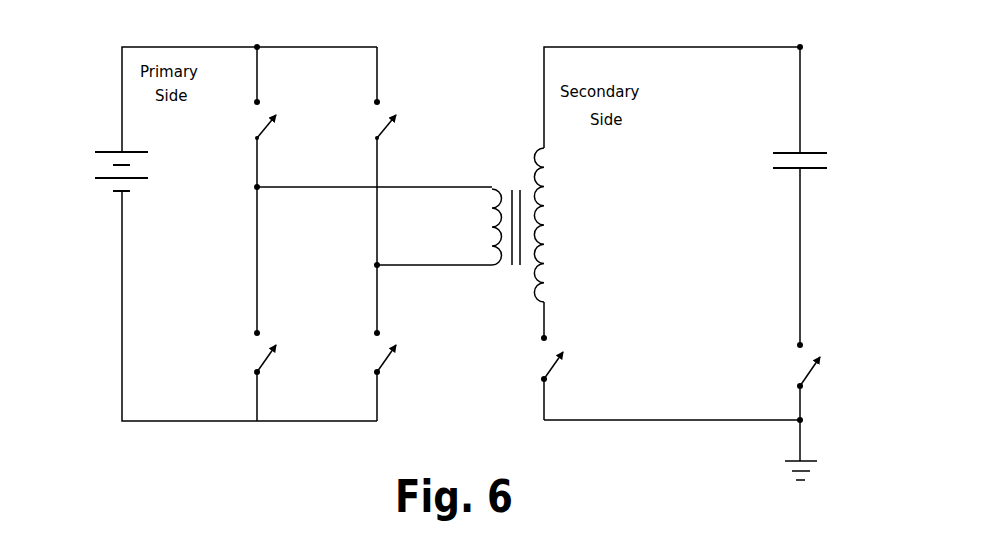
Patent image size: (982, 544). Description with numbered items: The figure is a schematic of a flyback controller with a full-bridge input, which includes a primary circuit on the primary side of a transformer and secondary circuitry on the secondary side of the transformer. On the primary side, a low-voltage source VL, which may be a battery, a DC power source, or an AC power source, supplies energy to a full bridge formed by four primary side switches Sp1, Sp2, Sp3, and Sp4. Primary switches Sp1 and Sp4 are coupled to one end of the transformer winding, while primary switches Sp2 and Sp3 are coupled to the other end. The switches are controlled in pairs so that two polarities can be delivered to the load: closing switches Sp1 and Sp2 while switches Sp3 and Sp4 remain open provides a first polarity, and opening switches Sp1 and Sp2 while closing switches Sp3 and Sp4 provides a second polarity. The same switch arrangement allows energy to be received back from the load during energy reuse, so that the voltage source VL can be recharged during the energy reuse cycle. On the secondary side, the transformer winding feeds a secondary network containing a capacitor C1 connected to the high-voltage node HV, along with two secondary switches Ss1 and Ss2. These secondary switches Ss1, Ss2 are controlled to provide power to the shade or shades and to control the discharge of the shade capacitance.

The voltage source VL is at (103, 171).
The primary side switch Sp1 is at (246, 117).
The primary side switch Sp2 is at (367, 343).
The primary side switch Sp3 is at (365, 157).
The primary side switch Sp4 is at (239, 304).
The secondary switch Ss1 is at (534, 361).
The secondary switch Ss2 is at (787, 411).
The capacitor C1 is at (817, 248).
The high voltage node HV is at (822, 96).